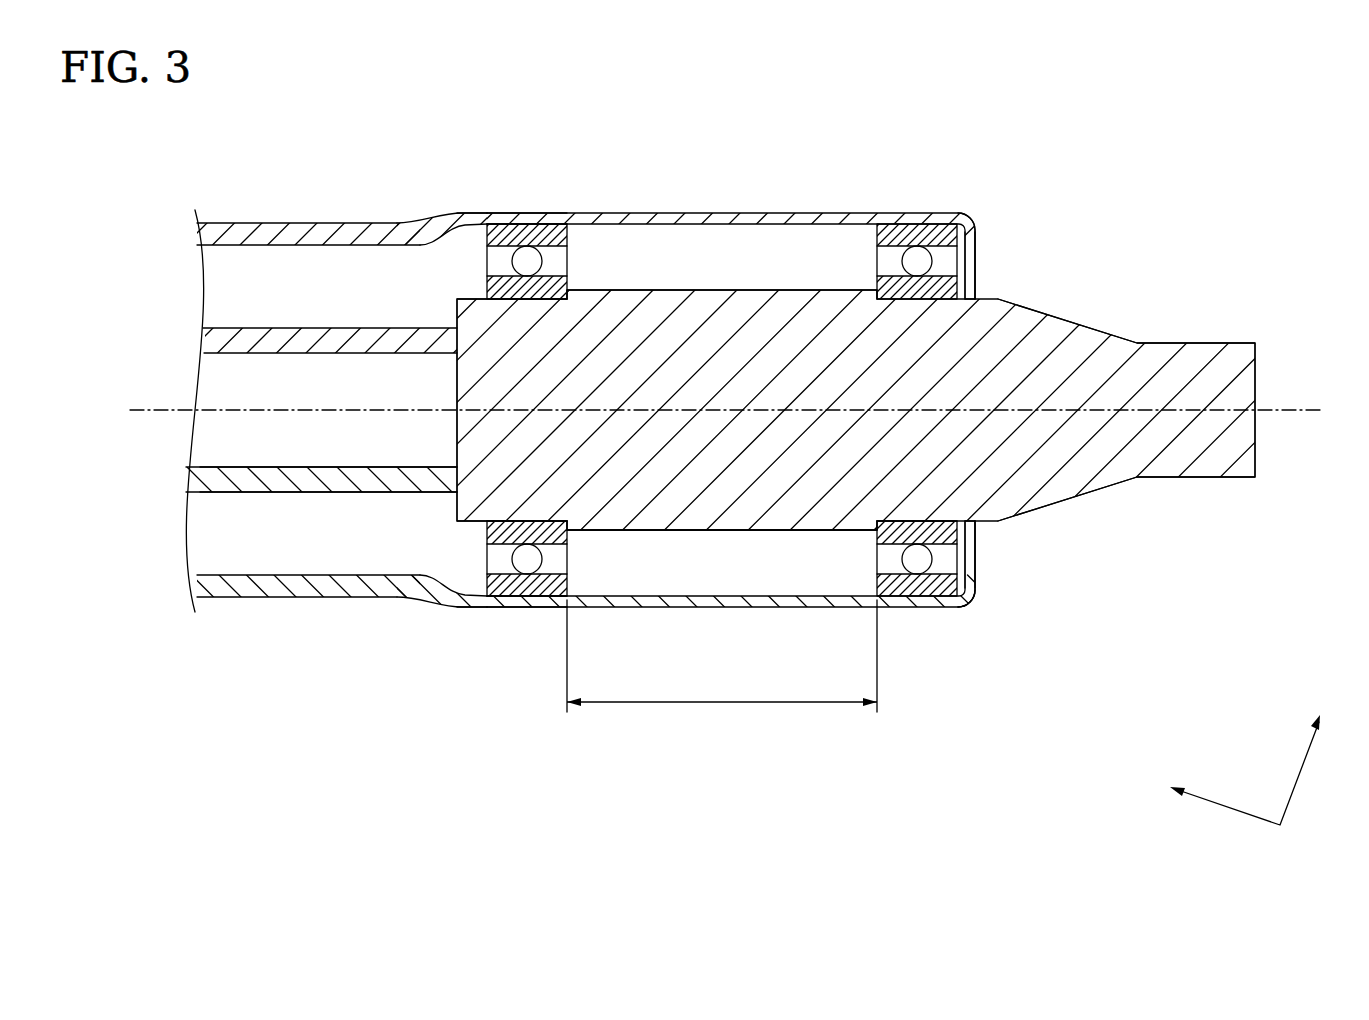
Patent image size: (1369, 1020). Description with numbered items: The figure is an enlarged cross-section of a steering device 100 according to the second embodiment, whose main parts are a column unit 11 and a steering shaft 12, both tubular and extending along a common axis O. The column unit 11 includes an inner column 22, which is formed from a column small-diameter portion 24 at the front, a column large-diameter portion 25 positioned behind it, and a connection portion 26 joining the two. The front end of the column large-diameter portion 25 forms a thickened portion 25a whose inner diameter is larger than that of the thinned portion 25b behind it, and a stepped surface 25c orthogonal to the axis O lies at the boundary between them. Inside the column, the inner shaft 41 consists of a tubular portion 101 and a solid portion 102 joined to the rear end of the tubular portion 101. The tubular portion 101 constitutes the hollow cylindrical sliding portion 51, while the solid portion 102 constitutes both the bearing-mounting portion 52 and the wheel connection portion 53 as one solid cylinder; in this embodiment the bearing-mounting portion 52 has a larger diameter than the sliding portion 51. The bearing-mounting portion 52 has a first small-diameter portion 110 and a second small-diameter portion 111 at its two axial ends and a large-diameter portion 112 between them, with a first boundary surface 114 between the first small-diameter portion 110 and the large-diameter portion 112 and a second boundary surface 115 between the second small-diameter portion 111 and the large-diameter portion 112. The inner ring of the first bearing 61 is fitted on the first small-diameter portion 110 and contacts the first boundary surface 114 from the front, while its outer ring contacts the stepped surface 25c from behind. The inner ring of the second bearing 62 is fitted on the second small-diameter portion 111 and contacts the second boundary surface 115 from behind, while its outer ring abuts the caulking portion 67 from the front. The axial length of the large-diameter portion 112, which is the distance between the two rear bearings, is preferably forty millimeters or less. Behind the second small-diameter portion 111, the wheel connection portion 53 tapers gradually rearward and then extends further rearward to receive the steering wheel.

The steering device 100 is at (749, 460).
The column unit 11 is at (967, 350).
The inner column 22 is at (938, 200).
The column small-diameter portion 24 is at (333, 222).
The connection portion 26 is at (430, 220).
The column large-diameter portion 25 is at (730, 361).
The thickened portion 25a is at (478, 213).
The thinned portion 25b is at (625, 222).
The stepped surface 25c is at (510, 224).
The first bearing 61 is at (528, 236).
The second bearing 62 is at (912, 236).
The caulking portion 67 is at (976, 236).
The axis O is at (1282, 408).
The steering shaft 12 is at (334, 510).
The inner shaft 41 is at (260, 503).
The sliding portion 51 is at (328, 579).
The tubular portion 101 is at (358, 478).
The solid portion 102 is at (808, 558).
The bearing-mounting portion 52 is at (820, 545).
The wheel connection portion 53 is at (1047, 507).
The first small-diameter portion 110 is at (525, 513).
The first boundary surface 114 is at (541, 548).
The large-diameter portion 112 is at (722, 527).
The second boundary surface 115 is at (933, 513).
The second small-diameter portion 111 is at (957, 608).